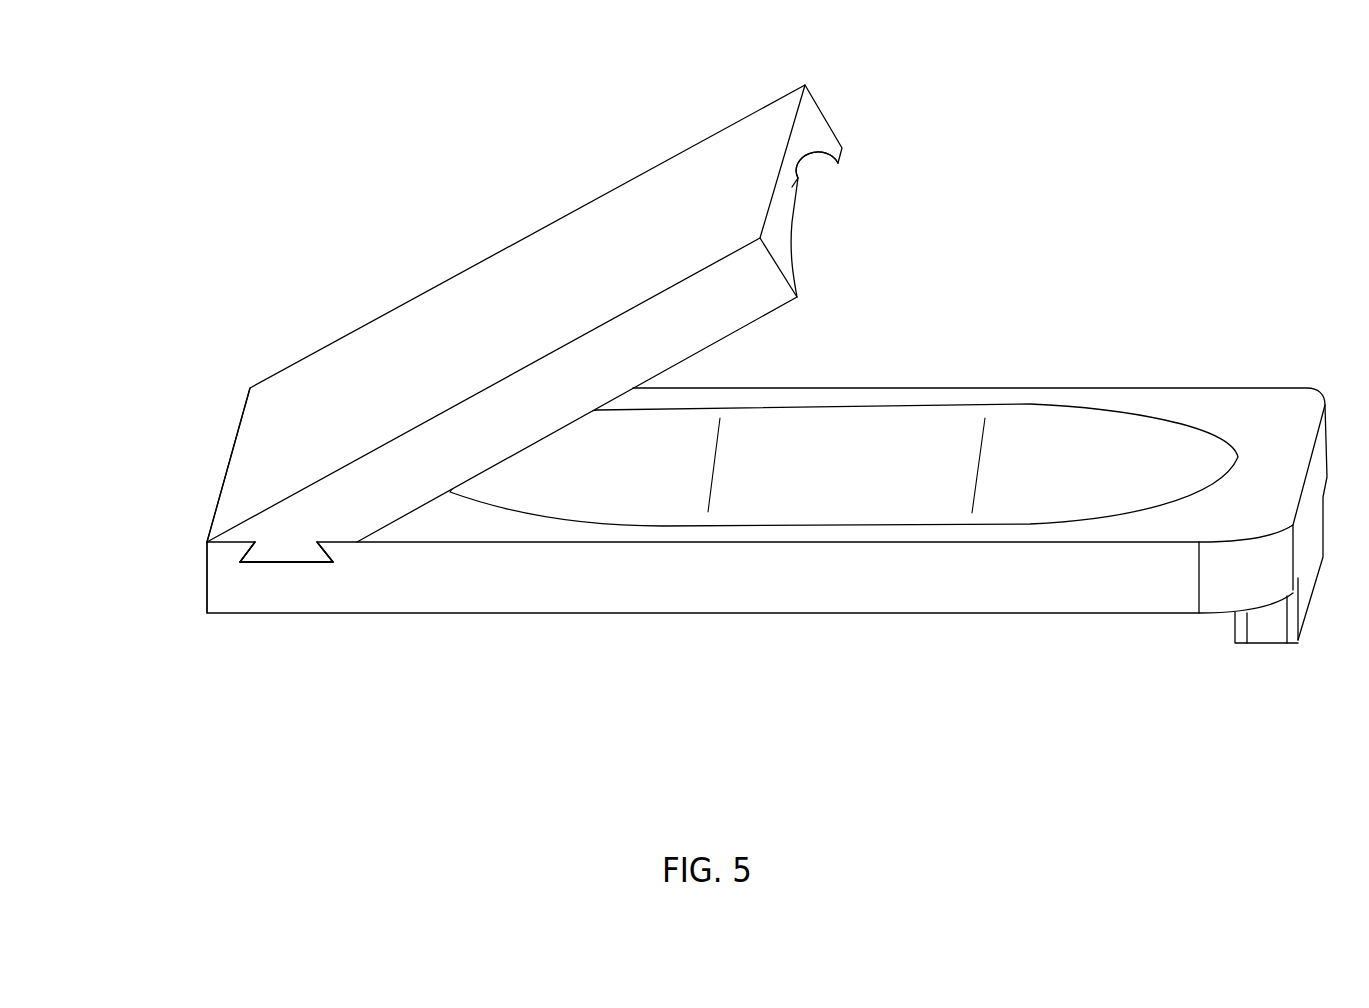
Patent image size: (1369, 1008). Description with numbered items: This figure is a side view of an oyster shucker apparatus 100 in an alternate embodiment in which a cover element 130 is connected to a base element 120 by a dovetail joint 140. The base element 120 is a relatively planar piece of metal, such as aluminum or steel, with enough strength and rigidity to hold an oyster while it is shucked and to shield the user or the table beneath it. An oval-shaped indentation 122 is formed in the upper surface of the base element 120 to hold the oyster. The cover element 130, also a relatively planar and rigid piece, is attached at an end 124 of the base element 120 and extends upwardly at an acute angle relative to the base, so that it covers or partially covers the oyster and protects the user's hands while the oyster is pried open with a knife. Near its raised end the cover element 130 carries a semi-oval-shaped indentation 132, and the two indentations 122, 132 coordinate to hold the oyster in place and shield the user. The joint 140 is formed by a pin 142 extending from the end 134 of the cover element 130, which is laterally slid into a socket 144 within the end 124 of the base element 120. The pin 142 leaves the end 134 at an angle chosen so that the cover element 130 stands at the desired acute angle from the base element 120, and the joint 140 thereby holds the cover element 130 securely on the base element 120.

The oyster shucker apparatus 100 is at (333, 148).
The base element 120 is at (1050, 588).
The oval-shaped indentation 122 is at (1048, 467).
The end of the base element 124 is at (222, 600).
The cover element 130 is at (740, 138).
The semi-oval-shaped indentation 132 is at (827, 178).
The end of the cover element 134 is at (260, 443).
The joint 140 is at (198, 505).
The pin 142 is at (290, 542).
The socket 144 is at (258, 563).